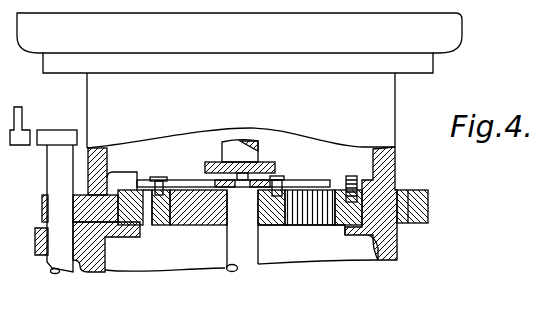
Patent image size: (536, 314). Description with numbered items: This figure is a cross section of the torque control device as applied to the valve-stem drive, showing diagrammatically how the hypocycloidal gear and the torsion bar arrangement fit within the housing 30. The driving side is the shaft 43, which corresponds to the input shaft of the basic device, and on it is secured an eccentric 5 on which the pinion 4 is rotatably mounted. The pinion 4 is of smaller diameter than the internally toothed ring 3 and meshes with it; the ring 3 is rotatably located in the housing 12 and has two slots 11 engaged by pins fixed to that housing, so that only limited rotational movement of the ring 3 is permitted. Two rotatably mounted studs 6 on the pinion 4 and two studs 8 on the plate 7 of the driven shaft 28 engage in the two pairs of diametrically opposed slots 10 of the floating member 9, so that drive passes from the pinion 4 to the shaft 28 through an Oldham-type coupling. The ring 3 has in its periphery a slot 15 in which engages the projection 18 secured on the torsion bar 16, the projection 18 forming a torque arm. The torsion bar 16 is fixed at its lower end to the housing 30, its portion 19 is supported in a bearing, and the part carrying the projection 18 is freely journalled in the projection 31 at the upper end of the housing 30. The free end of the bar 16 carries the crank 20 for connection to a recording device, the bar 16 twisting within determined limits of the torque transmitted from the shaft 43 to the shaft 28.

The internally toothed ring 3 is at (140, 232).
The pinion 4 is at (165, 227).
The eccentric 5 is at (218, 227).
The studs 6 is at (161, 177).
The plate 7 is at (263, 160).
The studs 8 is at (220, 151).
The floating member 9 is at (316, 178).
The slots 10 is at (348, 172).
The slots 11 is at (390, 158).
The housing 12 is at (396, 146).
The slot 15 is at (107, 163).
The torsion bar 16 is at (44, 266).
The projection 18 is at (93, 208).
The portion of the bar 19 is at (52, 273).
The crank 20 is at (25, 137).
The shaft 28 is at (243, 150).
The housing 30 is at (387, 263).
The projection 31 is at (36, 229).
The shaft 43 is at (252, 267).